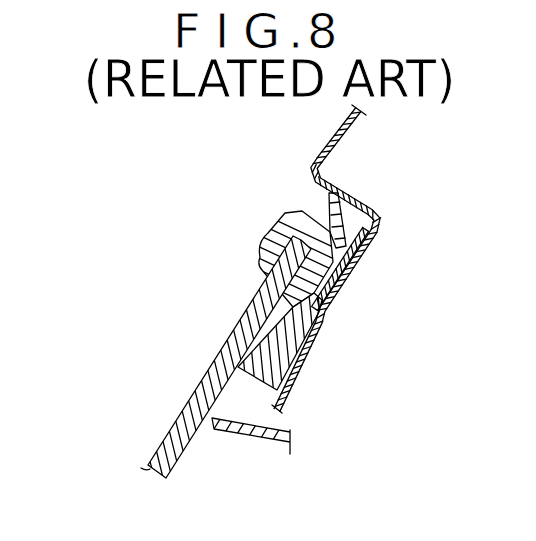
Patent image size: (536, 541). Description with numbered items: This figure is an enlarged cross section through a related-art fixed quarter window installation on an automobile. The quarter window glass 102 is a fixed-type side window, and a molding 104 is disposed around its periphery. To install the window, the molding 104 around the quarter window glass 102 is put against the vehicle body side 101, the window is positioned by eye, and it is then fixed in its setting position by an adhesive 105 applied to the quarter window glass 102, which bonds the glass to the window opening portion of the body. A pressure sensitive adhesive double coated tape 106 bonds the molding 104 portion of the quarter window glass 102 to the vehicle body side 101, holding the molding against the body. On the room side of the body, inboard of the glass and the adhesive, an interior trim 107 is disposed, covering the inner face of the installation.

The vehicle body side 101 is at (366, 244).
The quarter window glass 102 is at (185, 426).
The molding 104 is at (265, 245).
The adhesive 105 is at (288, 360).
The pressure sensitive adhesive double coated tape 106 is at (345, 286).
The interior trim 107 is at (258, 446).